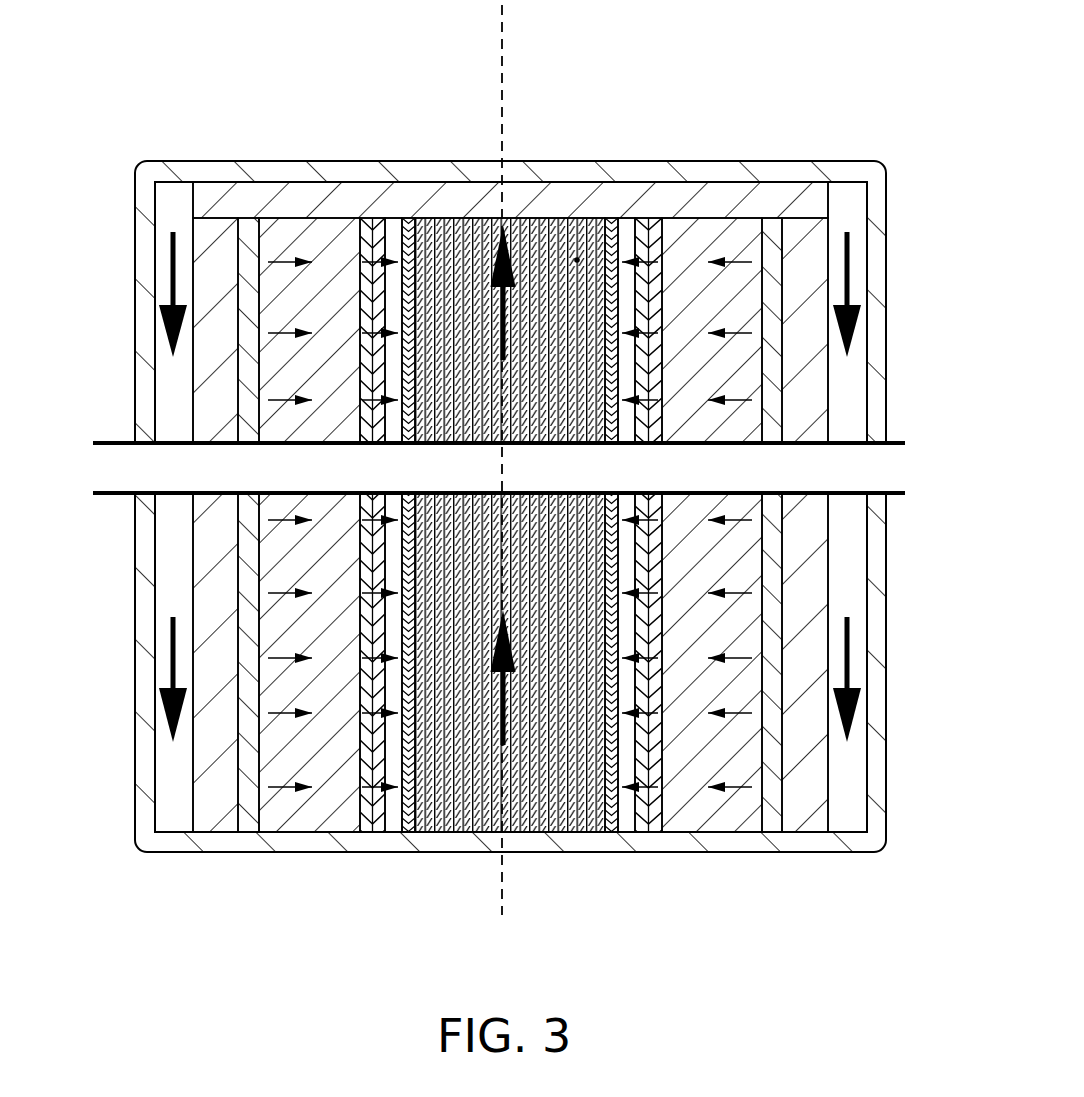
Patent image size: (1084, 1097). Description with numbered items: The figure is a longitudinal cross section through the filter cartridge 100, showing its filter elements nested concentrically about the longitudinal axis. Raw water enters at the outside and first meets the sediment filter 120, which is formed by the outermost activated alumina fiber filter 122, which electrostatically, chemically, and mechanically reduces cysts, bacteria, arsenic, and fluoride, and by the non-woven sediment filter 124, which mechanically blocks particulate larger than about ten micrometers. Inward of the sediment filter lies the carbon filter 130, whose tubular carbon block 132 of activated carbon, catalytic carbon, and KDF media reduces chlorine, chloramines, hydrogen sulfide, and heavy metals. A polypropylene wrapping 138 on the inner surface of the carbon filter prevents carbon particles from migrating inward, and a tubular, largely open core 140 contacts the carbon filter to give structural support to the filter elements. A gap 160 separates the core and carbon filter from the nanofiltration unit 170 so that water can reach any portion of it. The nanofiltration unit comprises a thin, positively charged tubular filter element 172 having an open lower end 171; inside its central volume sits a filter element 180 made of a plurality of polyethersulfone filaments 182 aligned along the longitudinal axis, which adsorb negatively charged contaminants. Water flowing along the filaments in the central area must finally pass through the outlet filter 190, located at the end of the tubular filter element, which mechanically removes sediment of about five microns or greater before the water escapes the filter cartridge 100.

The filter cartridge 100 is at (160, 73).
The sediment filter 120 is at (238, 847).
The activated alumina fiber filter 122 is at (193, 760).
The non-woven sediment filter 124 is at (242, 780).
The carbon filter 130 is at (343, 847).
The carbon block 132 is at (310, 820).
The wrapping 138 is at (367, 825).
The core 140 is at (642, 738).
The gap 160 is at (632, 830).
The nanofiltration unit 170 is at (528, 514).
The lower end of tubular filter element 171 is at (628, 215).
The tubular filter element 172 is at (612, 832).
The filter element 180 is at (547, 215).
The filaments 182 is at (577, 258).
The outlet filter 190 is at (317, 192).